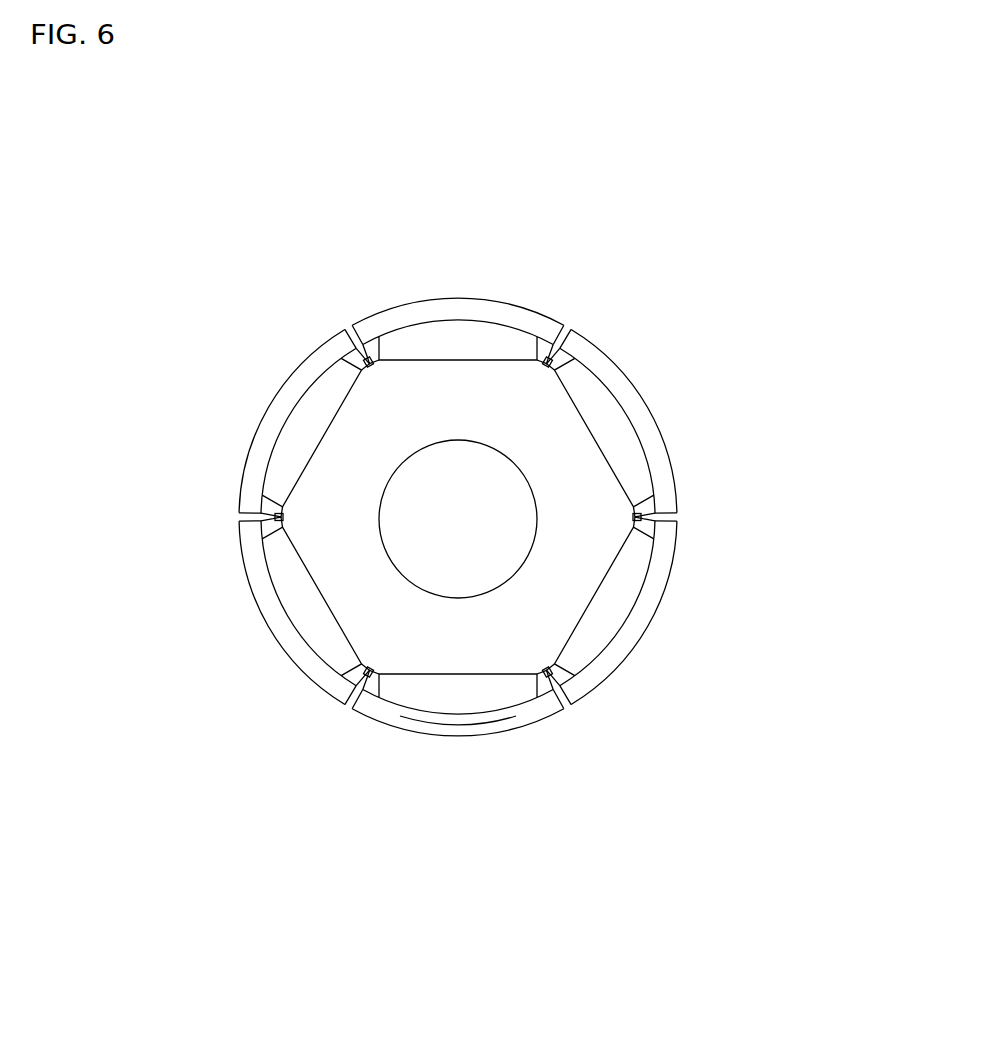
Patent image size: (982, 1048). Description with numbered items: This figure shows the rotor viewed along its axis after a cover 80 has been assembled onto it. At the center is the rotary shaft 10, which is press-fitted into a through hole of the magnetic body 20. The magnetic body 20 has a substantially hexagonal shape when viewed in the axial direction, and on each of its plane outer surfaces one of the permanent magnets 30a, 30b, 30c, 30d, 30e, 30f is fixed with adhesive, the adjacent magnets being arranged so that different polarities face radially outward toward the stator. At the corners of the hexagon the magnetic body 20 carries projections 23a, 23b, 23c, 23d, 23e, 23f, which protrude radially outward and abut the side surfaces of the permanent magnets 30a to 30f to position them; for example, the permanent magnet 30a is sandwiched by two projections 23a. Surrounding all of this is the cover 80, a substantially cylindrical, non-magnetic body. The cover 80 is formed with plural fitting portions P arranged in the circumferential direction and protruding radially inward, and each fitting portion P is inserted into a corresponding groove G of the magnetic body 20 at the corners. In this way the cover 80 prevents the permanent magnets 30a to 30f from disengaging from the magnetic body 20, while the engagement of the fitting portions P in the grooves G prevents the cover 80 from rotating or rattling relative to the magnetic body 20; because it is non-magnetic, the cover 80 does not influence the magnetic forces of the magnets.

The rotary shaft 10 is at (470, 548).
The magnetic body 20 is at (503, 395).
The cover 80 is at (430, 722).
The permanent magnet 30a is at (625, 432).
The permanent magnet 30b is at (620, 605).
The permanent magnet 30c is at (472, 700).
The permanent magnet 30d is at (307, 613).
The permanent magnet 30e is at (305, 420).
The permanent magnet 30f is at (436, 338).
The projection 23a is at (653, 498).
The projection 23b is at (562, 690).
The projection 23c is at (546, 695).
The projection 23d is at (365, 680).
The projection 23e is at (273, 515).
The projection 23f is at (545, 345).
The fitting portion P is at (364, 355).
The groove G is at (355, 348).